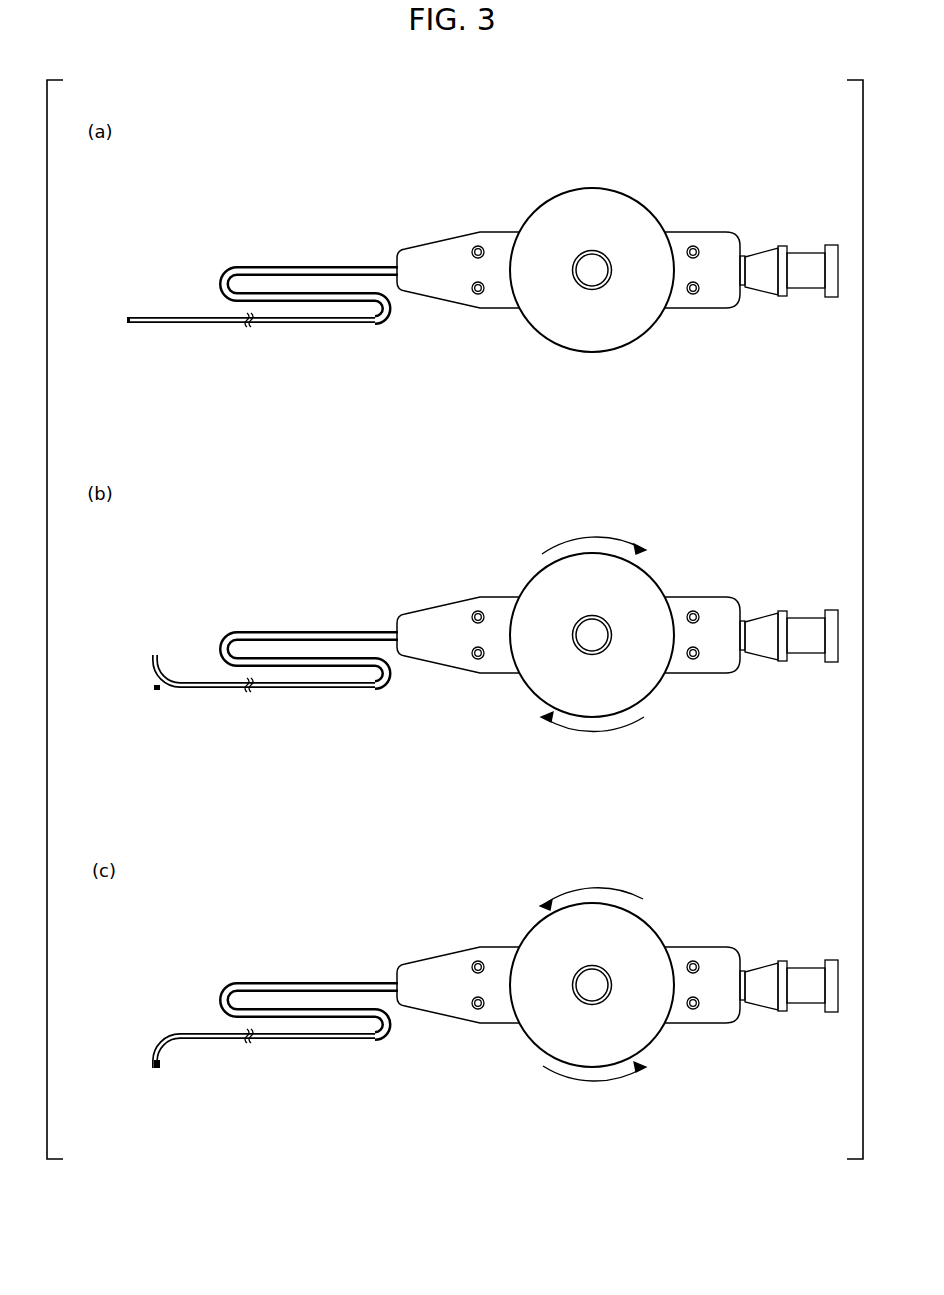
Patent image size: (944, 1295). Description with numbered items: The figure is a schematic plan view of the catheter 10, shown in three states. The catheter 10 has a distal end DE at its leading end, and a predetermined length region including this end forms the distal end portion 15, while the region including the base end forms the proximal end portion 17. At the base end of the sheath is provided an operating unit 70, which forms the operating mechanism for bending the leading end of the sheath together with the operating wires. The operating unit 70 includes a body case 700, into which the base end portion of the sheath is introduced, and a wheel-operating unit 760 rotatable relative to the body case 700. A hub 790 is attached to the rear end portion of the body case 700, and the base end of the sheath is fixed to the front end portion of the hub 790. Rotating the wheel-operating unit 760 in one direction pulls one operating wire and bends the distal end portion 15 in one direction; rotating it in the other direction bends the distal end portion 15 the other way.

The catheter 10 is at (461, 623).
The distal end portion 15 is at (155, 317).
The proximal end portion 17 is at (366, 266).
The operating unit 70 is at (637, 186).
The body case 700 is at (708, 240).
The wheel-operating unit 760 is at (553, 216).
The hub 790 is at (805, 247).
The distal end DE is at (126, 320).